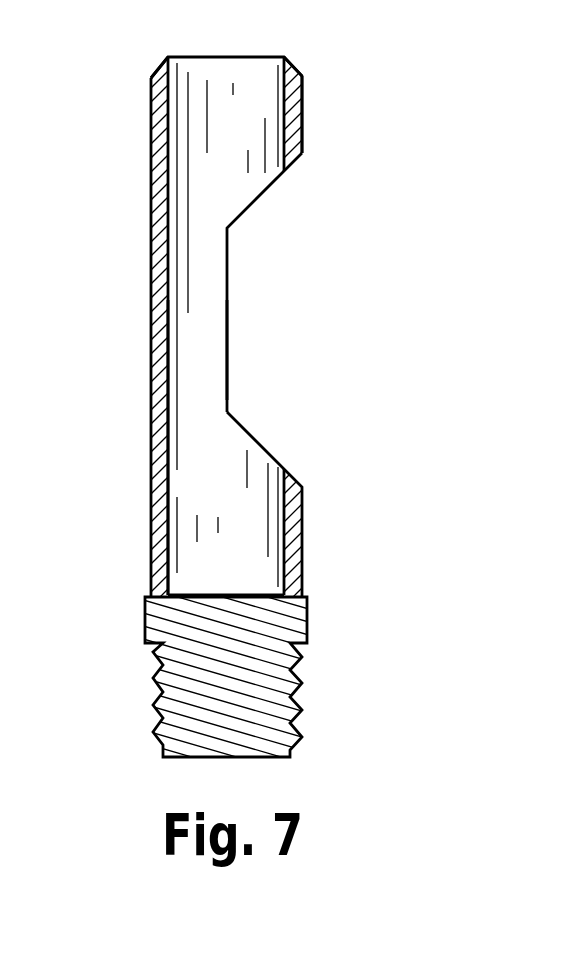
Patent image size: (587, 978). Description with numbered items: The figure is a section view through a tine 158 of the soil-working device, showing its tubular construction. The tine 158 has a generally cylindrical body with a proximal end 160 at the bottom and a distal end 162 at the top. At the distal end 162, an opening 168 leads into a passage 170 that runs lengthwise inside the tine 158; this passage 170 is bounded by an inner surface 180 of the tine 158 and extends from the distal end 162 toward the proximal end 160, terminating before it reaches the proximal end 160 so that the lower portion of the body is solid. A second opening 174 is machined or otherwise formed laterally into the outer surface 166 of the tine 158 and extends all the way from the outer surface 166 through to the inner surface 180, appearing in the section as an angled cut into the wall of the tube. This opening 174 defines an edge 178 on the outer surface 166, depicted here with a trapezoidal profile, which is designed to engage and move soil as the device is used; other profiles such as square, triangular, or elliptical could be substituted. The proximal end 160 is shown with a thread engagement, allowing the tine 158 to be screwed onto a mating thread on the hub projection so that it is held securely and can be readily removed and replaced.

The tine 158 is at (306, 397).
The proximal end 160 is at (138, 744).
The distal end 162 is at (134, 101).
The outer surface 166 is at (302, 125).
The opening 168 is at (242, 92).
The passage 170 is at (200, 489).
The second opening 174 is at (282, 338).
The edge 178 is at (265, 448).
The inner surface 180 is at (203, 310).